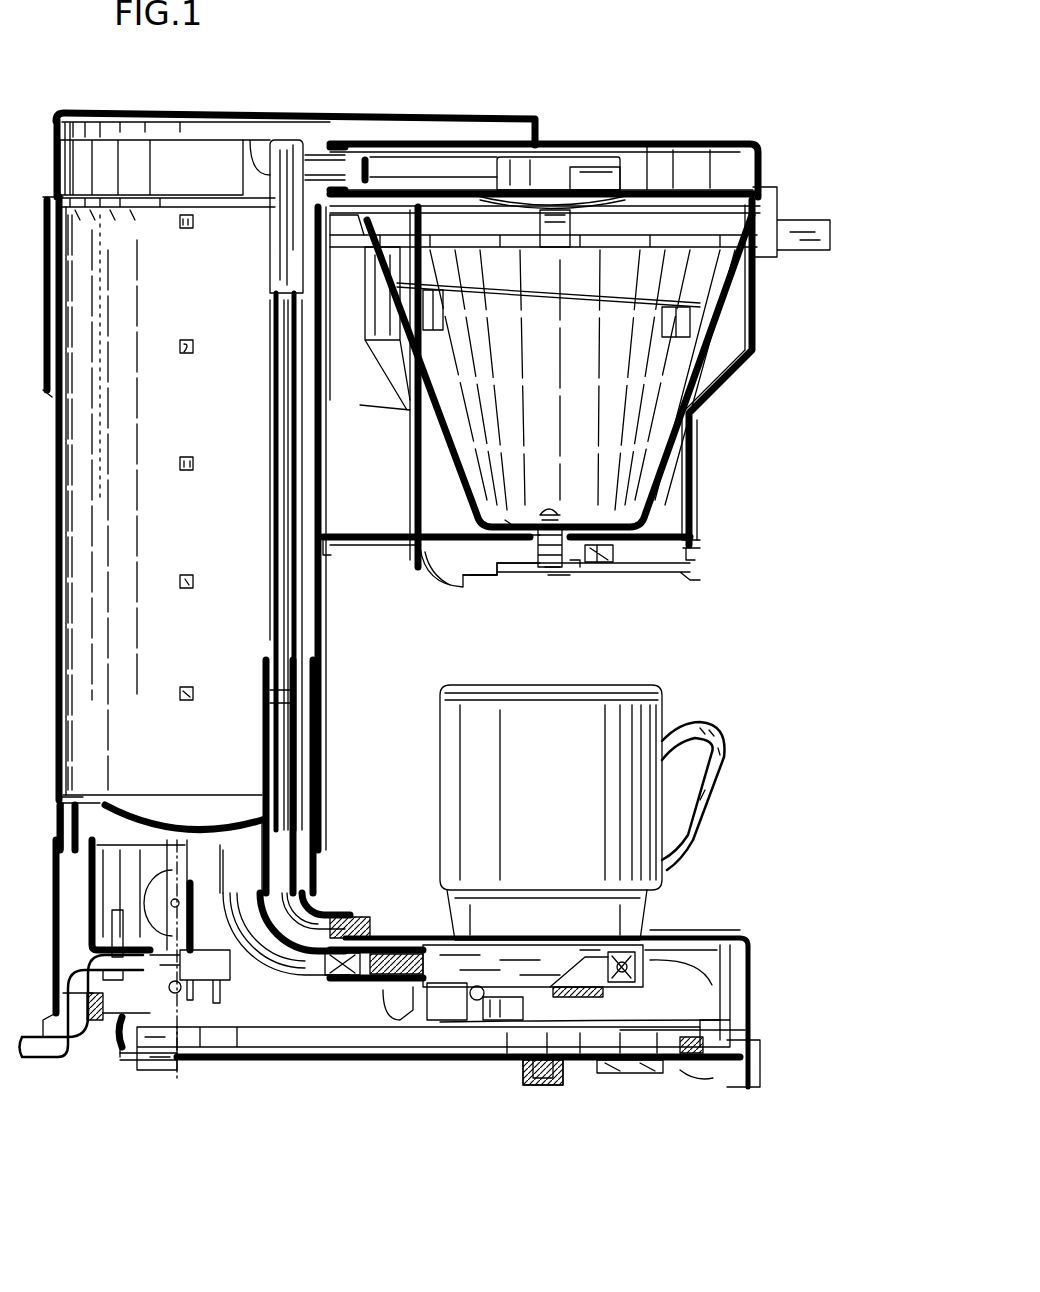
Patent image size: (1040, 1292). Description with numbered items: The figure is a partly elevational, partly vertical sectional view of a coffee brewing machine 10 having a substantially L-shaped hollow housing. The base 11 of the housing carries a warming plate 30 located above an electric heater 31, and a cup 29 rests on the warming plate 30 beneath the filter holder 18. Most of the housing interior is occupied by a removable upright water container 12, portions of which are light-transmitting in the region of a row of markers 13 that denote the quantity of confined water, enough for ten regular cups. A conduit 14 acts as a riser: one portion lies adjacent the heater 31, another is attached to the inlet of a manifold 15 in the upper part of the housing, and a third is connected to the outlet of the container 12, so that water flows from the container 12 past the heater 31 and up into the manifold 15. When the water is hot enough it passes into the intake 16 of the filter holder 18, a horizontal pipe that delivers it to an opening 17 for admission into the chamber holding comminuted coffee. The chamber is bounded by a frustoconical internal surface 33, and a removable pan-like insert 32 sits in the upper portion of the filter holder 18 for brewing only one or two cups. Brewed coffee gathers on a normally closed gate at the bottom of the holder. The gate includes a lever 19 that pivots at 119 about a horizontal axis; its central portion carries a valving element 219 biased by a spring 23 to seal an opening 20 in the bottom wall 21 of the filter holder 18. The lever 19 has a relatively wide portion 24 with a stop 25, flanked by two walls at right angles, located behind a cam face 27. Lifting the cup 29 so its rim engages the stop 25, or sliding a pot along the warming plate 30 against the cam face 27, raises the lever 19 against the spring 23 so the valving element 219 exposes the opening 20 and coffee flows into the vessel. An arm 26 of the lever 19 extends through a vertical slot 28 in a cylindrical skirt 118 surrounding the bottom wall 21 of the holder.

The machine 10 is at (291, 94).
The base 11 is at (434, 1090).
The water container 12 is at (117, 558).
The markers 13 is at (185, 672).
The conduit 14 is at (276, 388).
The manifold 15 is at (268, 262).
The intake 16 is at (540, 140).
The opening 17 is at (560, 207).
The filter holder 18 is at (716, 442).
The lever 19 is at (499, 591).
The opening 20 is at (581, 520).
The bottom wall 21 is at (503, 527).
The spring 23 is at (561, 567).
The wide portion 24 is at (431, 572).
The stop 25 is at (490, 568).
The arm 26 is at (373, 543).
The cam face 27 is at (495, 570).
The slot 28 is at (415, 527).
The cup 29 is at (679, 699).
The warming plate 30 is at (687, 930).
The heater 31 is at (627, 1011).
The insert 32 is at (542, 321).
The frustoconical internal surface 33 is at (692, 350).
The cylindrical skirt 118 is at (692, 477).
The pivot 119 is at (692, 541).
The valving element 219 is at (547, 515).